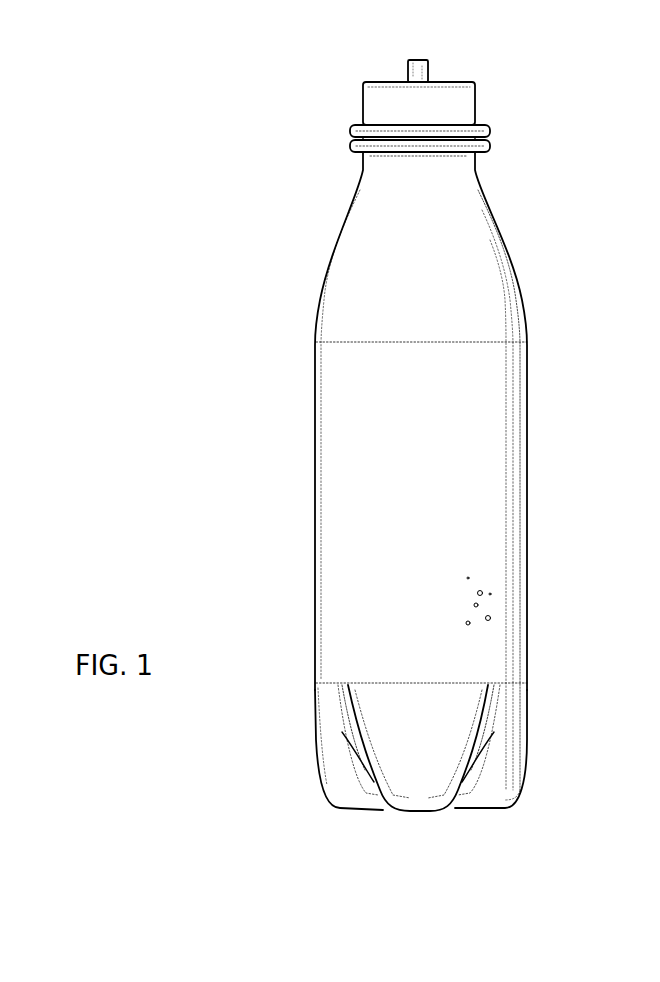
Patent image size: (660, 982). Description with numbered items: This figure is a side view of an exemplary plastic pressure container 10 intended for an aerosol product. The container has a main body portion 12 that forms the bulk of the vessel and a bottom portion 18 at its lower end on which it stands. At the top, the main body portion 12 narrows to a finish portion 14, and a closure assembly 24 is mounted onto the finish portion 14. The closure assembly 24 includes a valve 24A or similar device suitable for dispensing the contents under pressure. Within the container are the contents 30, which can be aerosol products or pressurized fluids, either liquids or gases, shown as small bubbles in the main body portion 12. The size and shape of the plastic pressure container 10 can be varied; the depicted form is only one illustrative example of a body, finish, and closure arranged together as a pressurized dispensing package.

The plastic pressure container 10 is at (543, 217).
The main body portion 12 is at (498, 468).
The finish portion 14 is at (477, 108).
The bottom portion 18 is at (432, 803).
The closure assembly 24 is at (451, 81).
The valve 24A is at (410, 64).
The contents 30 is at (473, 605).